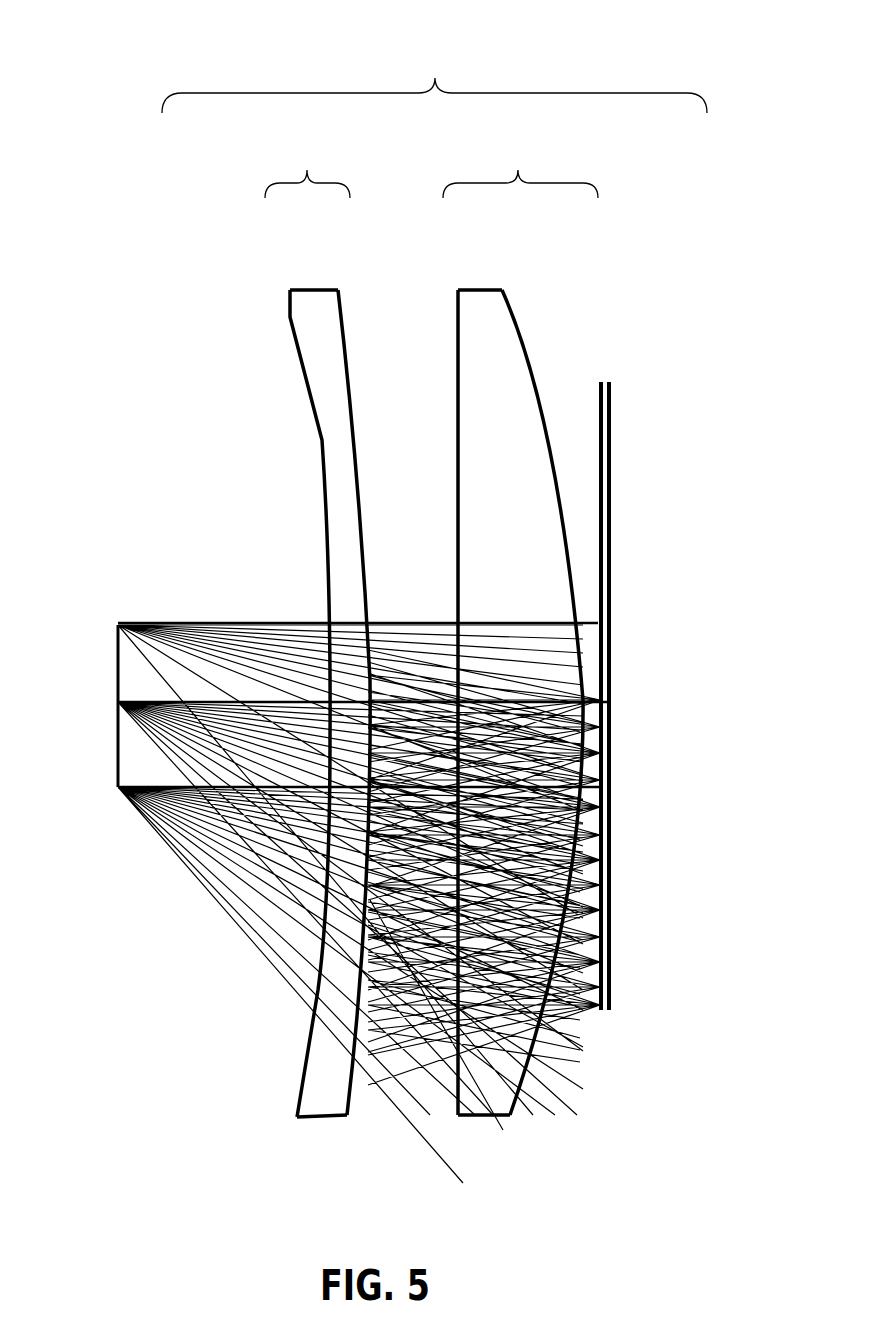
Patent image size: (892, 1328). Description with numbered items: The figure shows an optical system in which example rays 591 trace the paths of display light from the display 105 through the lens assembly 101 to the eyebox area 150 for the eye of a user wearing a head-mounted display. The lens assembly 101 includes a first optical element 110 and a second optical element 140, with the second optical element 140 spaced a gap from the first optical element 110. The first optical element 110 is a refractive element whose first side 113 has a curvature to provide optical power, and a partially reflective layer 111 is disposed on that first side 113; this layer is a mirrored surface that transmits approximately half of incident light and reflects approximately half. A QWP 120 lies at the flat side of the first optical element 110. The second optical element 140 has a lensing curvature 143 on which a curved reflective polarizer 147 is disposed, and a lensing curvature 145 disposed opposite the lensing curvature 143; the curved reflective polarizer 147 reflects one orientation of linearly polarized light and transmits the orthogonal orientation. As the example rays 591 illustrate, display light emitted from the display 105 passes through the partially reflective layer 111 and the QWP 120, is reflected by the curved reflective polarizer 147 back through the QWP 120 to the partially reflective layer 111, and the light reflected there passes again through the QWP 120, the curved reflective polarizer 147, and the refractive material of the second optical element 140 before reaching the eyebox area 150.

The lens assembly 101 is at (434, 79).
The second optical element 140 is at (309, 644).
The first optical element 110 is at (520, 648).
The QWP 120 is at (457, 286).
The display 105 is at (602, 381).
The partially reflective layer 111 is at (530, 344).
The first side 113 is at (561, 498).
The lensing curvature 143 is at (355, 464).
The lensing curvature 145 is at (325, 510).
The curved reflective polarizer 147 is at (357, 382).
The example rays 591 is at (400, 611).
The eyebox area 150 is at (119, 625).